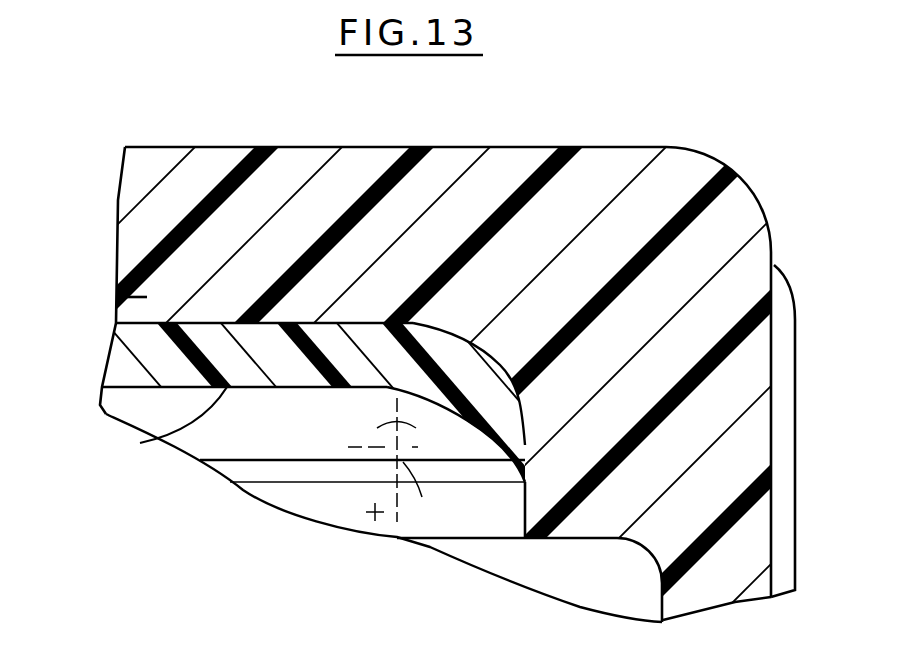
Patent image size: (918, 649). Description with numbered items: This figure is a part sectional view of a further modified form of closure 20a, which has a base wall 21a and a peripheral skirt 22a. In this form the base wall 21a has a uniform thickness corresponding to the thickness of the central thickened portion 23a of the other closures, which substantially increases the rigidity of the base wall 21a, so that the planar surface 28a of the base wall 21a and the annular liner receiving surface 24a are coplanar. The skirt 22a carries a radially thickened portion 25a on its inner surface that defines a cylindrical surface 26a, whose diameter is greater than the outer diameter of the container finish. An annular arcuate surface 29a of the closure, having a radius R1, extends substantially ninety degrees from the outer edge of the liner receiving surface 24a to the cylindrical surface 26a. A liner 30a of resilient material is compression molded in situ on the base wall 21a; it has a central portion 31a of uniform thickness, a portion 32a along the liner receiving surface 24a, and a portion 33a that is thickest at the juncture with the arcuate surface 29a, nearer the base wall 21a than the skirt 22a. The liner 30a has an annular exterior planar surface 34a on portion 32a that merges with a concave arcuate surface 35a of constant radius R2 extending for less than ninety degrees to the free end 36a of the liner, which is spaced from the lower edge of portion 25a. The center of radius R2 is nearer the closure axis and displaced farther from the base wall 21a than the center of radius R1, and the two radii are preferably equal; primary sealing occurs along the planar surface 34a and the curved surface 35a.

The closure 20a is at (627, 137).
The base wall 21a is at (380, 148).
The peripheral skirt 22a is at (757, 522).
The central thickened portion 23a is at (120, 297).
The annular liner receiving surface 24a is at (214, 330).
The radially thickened portion 25a is at (620, 502).
The cylindrical surface 26a is at (510, 537).
The planar surface 28a is at (137, 323).
The annular arcuate surface 29a is at (462, 356).
The liner 30a is at (254, 371).
The central portion of liner 31a is at (120, 371).
The channel portion of liner 32a is at (348, 350).
The thicker portion of liner 33a is at (433, 357).
The annular exterior planar surface 34a is at (162, 435).
The arcuate surface of liner 35a is at (423, 397).
The free end of liner 36a is at (508, 462).
The radius of closure arcuate surface R1 is at (383, 460).
The radius of liner arcuate surface R2 is at (455, 421).